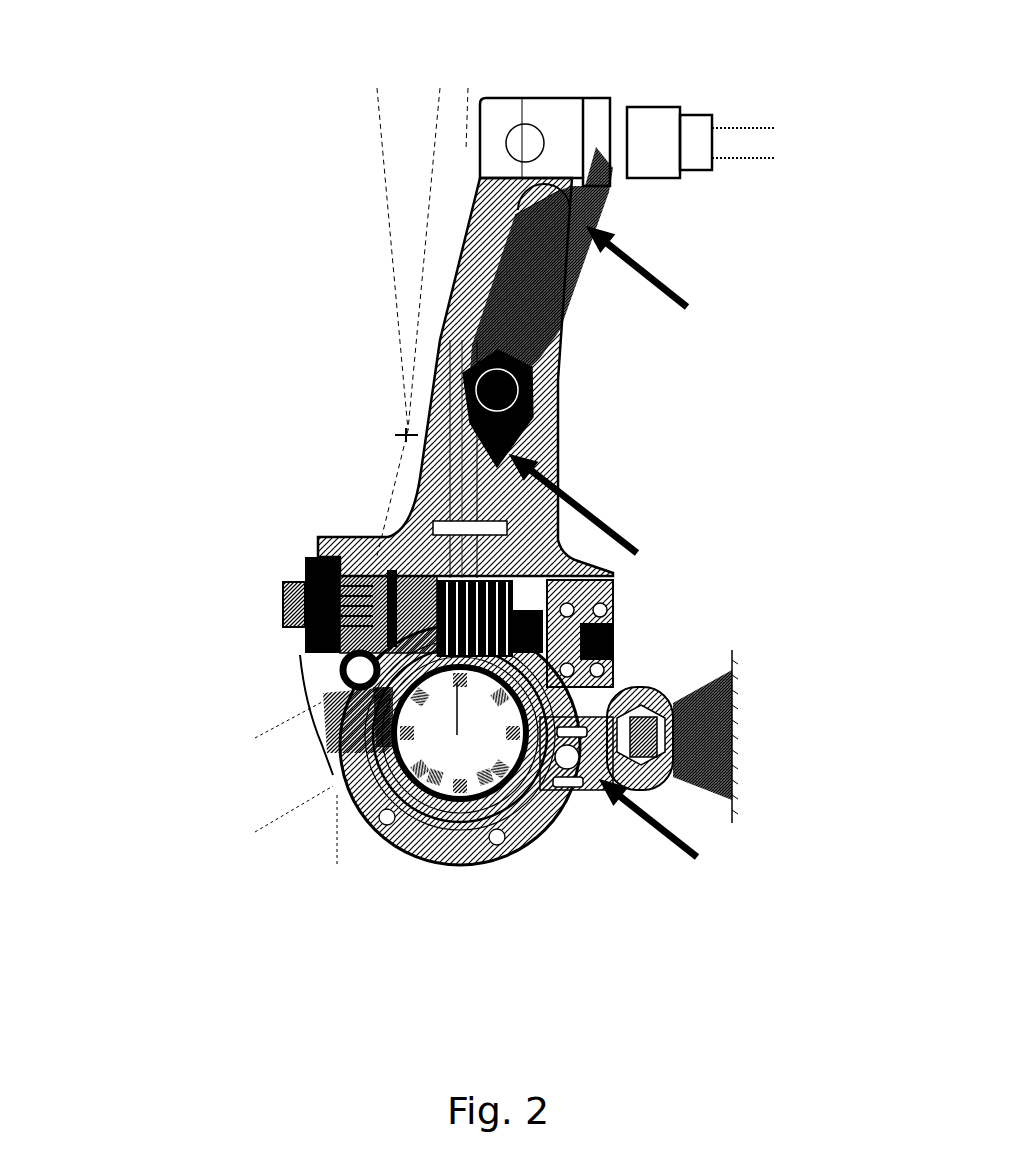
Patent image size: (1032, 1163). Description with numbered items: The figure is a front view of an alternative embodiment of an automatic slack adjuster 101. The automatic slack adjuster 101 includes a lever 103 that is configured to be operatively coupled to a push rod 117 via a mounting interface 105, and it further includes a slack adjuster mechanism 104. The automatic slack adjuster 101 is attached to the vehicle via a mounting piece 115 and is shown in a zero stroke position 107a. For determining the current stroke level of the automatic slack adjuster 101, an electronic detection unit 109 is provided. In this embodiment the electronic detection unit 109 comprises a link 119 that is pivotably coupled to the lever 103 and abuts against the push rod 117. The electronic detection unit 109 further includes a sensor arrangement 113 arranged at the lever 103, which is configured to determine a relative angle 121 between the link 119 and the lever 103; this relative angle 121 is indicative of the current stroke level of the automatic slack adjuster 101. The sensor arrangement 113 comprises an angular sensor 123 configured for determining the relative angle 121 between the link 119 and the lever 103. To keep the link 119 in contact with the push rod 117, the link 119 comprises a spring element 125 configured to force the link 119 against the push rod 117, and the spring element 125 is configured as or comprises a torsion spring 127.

The automatic slack adjuster 101 is at (195, 81).
The lever 103 is at (547, 430).
The slack adjuster mechanism 104 is at (299, 571).
The mounting interface 105 is at (513, 138).
The zero stroke position 107a is at (566, 298).
The electronic detection unit 109 is at (613, 516).
The sensor arrangement 113 is at (523, 435).
The mounting piece 115 is at (647, 760).
The push rod 117 is at (660, 140).
The link 119 is at (667, 270).
The relative angle 121 is at (539, 212).
The angular sensor 123 is at (450, 440).
The spring element 125 is at (476, 393).
The torsion spring 127 is at (497, 390).